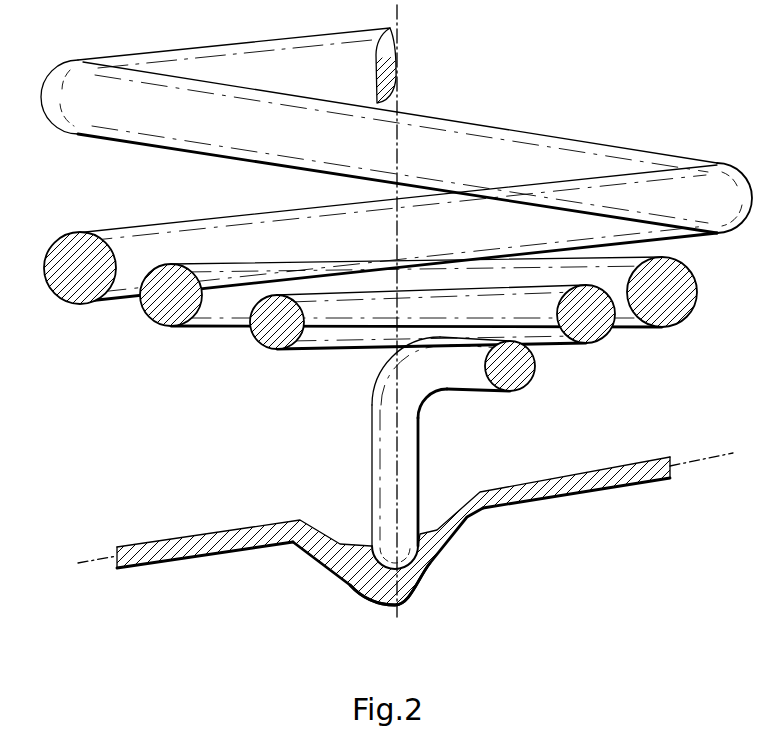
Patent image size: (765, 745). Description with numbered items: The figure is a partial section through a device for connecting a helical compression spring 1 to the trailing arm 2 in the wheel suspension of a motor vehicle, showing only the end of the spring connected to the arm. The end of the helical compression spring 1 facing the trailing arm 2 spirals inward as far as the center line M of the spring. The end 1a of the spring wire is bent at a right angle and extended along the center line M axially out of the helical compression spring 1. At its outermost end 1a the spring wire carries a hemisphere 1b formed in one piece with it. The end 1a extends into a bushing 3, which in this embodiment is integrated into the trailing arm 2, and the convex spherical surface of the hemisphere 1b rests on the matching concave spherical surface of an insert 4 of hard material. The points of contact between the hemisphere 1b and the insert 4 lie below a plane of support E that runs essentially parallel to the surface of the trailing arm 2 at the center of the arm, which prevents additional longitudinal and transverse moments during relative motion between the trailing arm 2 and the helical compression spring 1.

The helical compression spring 1 is at (396, 340).
The end of the spring wire 1a is at (372, 460).
The hemisphere 1b is at (404, 587).
The trailing arm 2 is at (405, 538).
The bushing 3 is at (431, 583).
The insert 4 is at (364, 594).
The center line of the spring M is at (397, 52).
The plane of support E is at (717, 465).